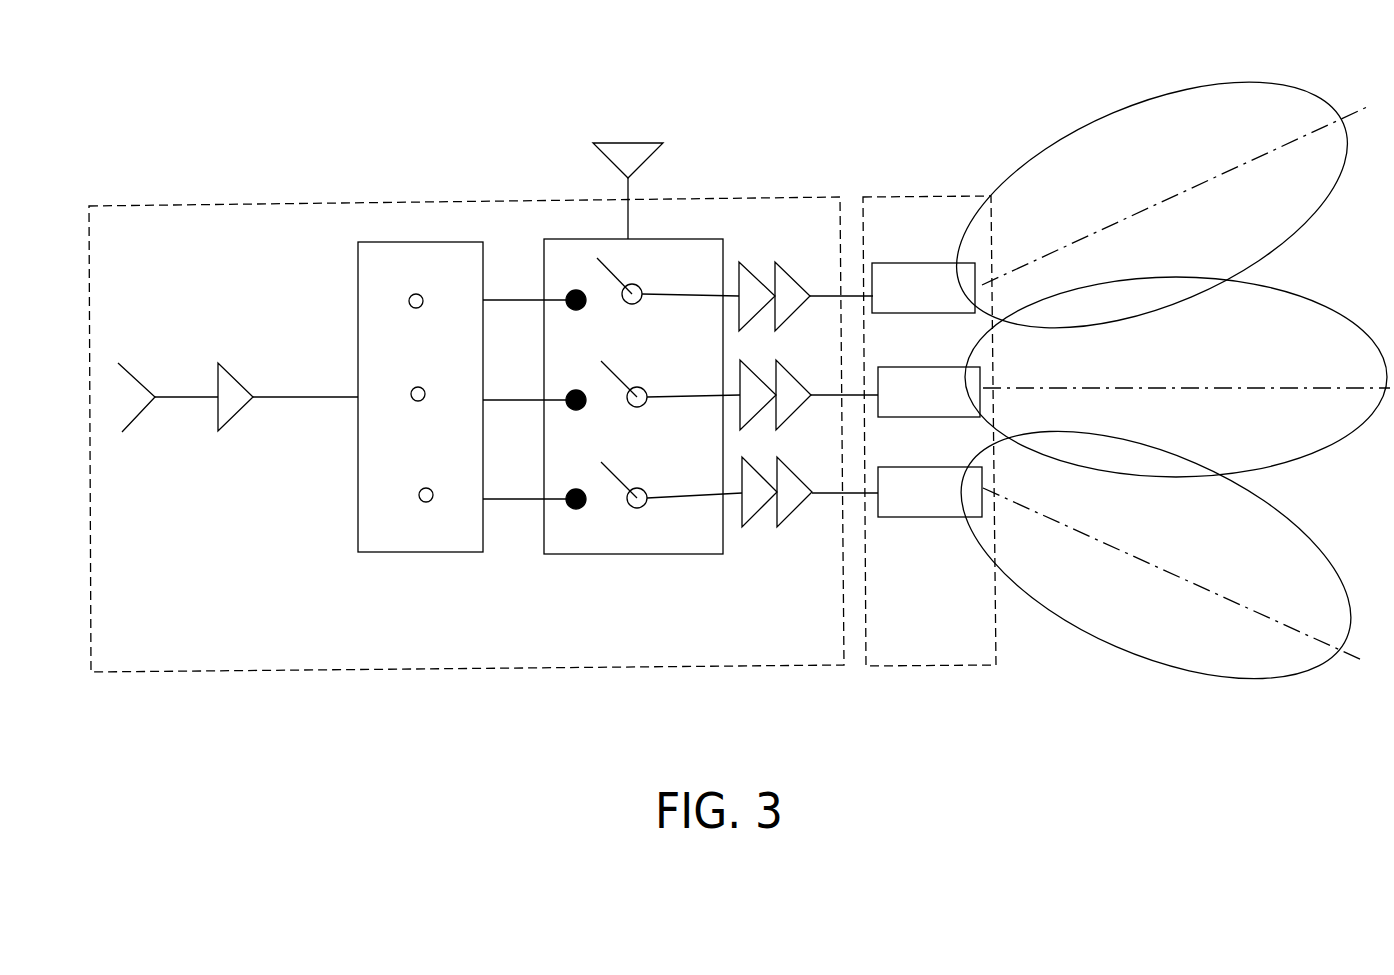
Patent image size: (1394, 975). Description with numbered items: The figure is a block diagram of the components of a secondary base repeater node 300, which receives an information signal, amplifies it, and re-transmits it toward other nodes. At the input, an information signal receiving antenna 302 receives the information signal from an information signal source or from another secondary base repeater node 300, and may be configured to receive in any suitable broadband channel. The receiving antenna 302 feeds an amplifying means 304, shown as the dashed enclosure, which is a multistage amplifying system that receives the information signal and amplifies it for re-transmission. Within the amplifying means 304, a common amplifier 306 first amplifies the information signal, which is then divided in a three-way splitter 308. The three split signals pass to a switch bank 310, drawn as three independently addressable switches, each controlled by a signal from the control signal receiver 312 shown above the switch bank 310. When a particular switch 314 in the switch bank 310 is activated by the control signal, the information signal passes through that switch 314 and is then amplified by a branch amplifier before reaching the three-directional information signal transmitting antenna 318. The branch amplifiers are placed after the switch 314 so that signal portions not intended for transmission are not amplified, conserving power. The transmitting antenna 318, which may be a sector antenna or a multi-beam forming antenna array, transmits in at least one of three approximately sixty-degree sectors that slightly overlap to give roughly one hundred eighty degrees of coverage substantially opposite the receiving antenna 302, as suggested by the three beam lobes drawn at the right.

The secondary base repeater node 300 is at (483, 412).
The information signal receiving antenna 302 is at (137, 378).
The amplifying means 304 is at (395, 652).
The common amplifier 306 is at (230, 397).
The three-way splitter 308 is at (412, 248).
The switch bank 310 is at (672, 438).
The control signal receiver 312 is at (653, 153).
The switch 314 is at (617, 500).
The three-directional information signal transmitting antenna 318 is at (913, 278).